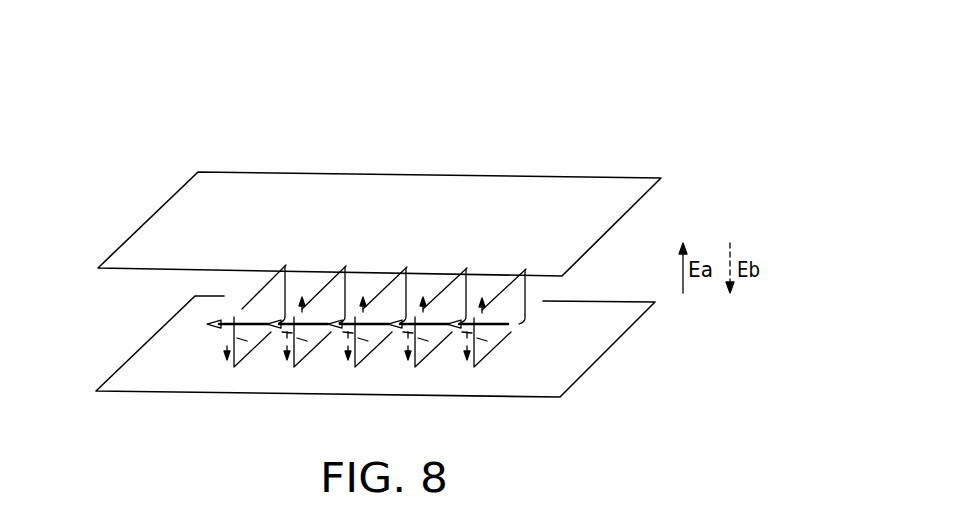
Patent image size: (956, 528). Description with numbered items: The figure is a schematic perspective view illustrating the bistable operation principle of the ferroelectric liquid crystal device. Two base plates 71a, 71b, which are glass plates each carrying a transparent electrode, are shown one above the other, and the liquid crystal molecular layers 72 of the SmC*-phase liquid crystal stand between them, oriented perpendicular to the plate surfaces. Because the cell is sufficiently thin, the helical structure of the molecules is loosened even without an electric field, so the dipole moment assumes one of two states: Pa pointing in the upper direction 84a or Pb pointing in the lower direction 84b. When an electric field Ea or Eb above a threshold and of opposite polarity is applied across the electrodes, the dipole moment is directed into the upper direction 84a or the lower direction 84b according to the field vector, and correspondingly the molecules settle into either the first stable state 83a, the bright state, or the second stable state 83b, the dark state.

The base plate 71a is at (610, 188).
The base plate 71b is at (615, 322).
The liquid crystal molecular layers 72 is at (522, 292).
The first stable state 83a is at (258, 317).
The second stable state 83b is at (243, 341).
The upper direction 84a is at (241, 307).
The lower direction 84b is at (222, 338).